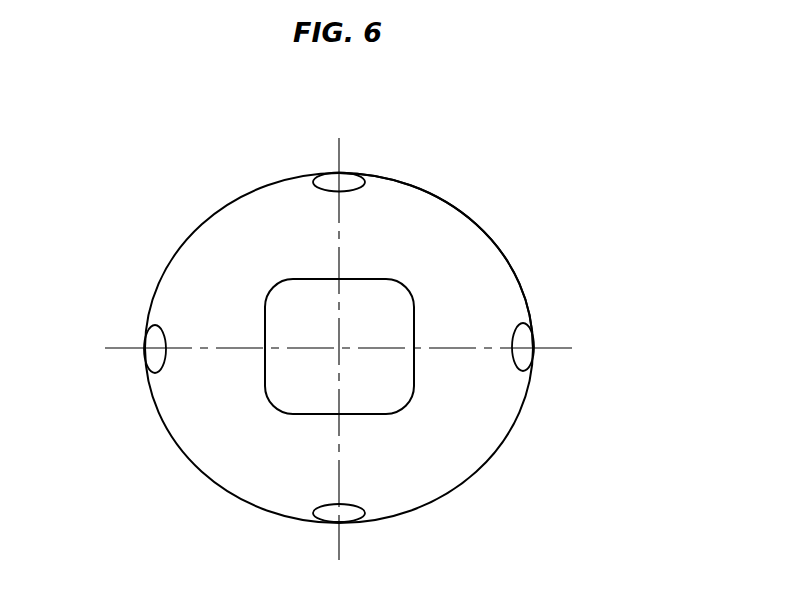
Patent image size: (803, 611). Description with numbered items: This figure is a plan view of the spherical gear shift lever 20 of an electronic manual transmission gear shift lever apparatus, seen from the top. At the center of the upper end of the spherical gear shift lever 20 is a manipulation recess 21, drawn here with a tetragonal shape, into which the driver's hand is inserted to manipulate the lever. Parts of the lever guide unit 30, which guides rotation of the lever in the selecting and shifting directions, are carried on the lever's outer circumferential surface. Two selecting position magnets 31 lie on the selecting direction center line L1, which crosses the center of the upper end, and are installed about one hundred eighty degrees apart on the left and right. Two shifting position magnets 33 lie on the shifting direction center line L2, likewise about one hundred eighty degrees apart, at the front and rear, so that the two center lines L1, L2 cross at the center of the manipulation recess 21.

The spherical gear shift lever 20 is at (470, 240).
The manipulation recess 21 is at (289, 310).
The lever guide unit 30 is at (535, 358).
The selecting position magnets 31 is at (153, 360).
The shifting position magnets 33 is at (326, 178).
The selecting direction center line L1 is at (340, 349).
The shifting direction center line L2 is at (339, 348).